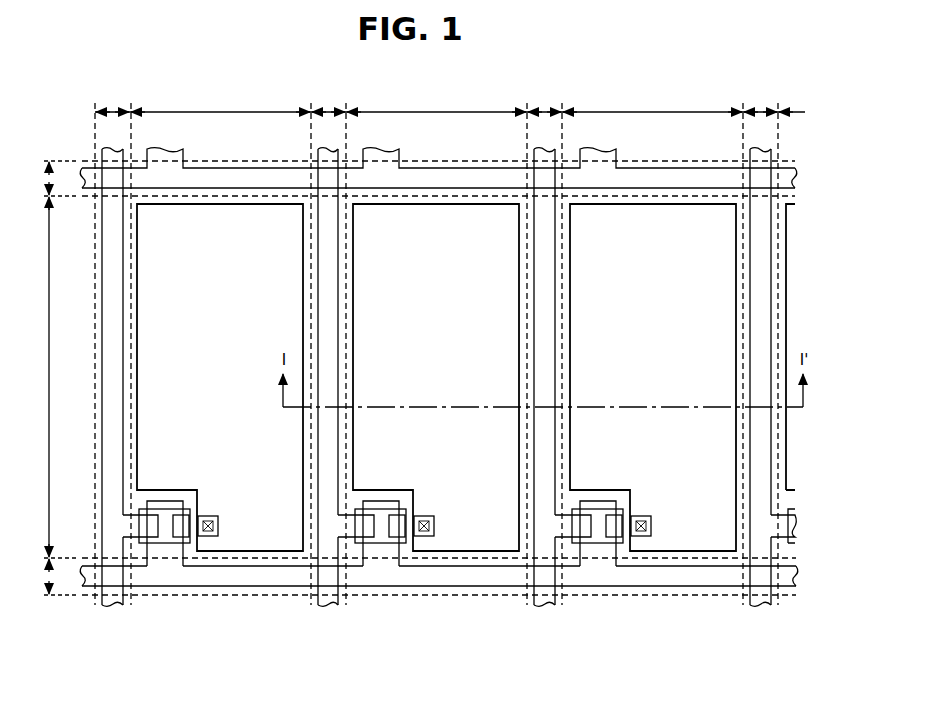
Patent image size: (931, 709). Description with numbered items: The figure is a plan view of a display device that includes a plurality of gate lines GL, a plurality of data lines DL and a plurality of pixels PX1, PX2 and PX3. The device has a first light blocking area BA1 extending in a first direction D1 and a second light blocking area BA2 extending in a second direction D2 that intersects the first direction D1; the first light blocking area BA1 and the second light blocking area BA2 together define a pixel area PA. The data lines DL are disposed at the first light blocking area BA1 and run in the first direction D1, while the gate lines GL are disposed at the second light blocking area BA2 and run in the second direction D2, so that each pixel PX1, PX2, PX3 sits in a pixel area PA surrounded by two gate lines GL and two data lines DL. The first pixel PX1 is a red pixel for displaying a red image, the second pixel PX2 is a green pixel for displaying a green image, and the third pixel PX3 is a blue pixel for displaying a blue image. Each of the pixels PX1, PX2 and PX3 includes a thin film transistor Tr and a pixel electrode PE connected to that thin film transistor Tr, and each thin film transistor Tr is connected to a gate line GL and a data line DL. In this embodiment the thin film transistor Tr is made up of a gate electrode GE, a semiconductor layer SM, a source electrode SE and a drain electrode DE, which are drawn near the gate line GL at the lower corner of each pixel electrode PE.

The gate line GL is at (82, 578).
The data line DL is at (112, 605).
The pixel electrode PE is at (457, 552).
The gate electrode GE is at (381, 505).
The semiconductor layer SM is at (401, 543).
The source electrode SE is at (358, 530).
The drain electrode DE is at (410, 530).
The thin film transistor Tr is at (437, 637).
The first pixel PX1 is at (235, 560).
The second pixel PX2 is at (488, 560).
The third pixel PX3 is at (680, 560).
The first light blocking area BA1 is at (450, 100).
The second light blocking area BA2 is at (44, 378).
The pixel area PA is at (414, 323).
The first direction D1 is at (790, 685).
The second direction D2 is at (790, 685).